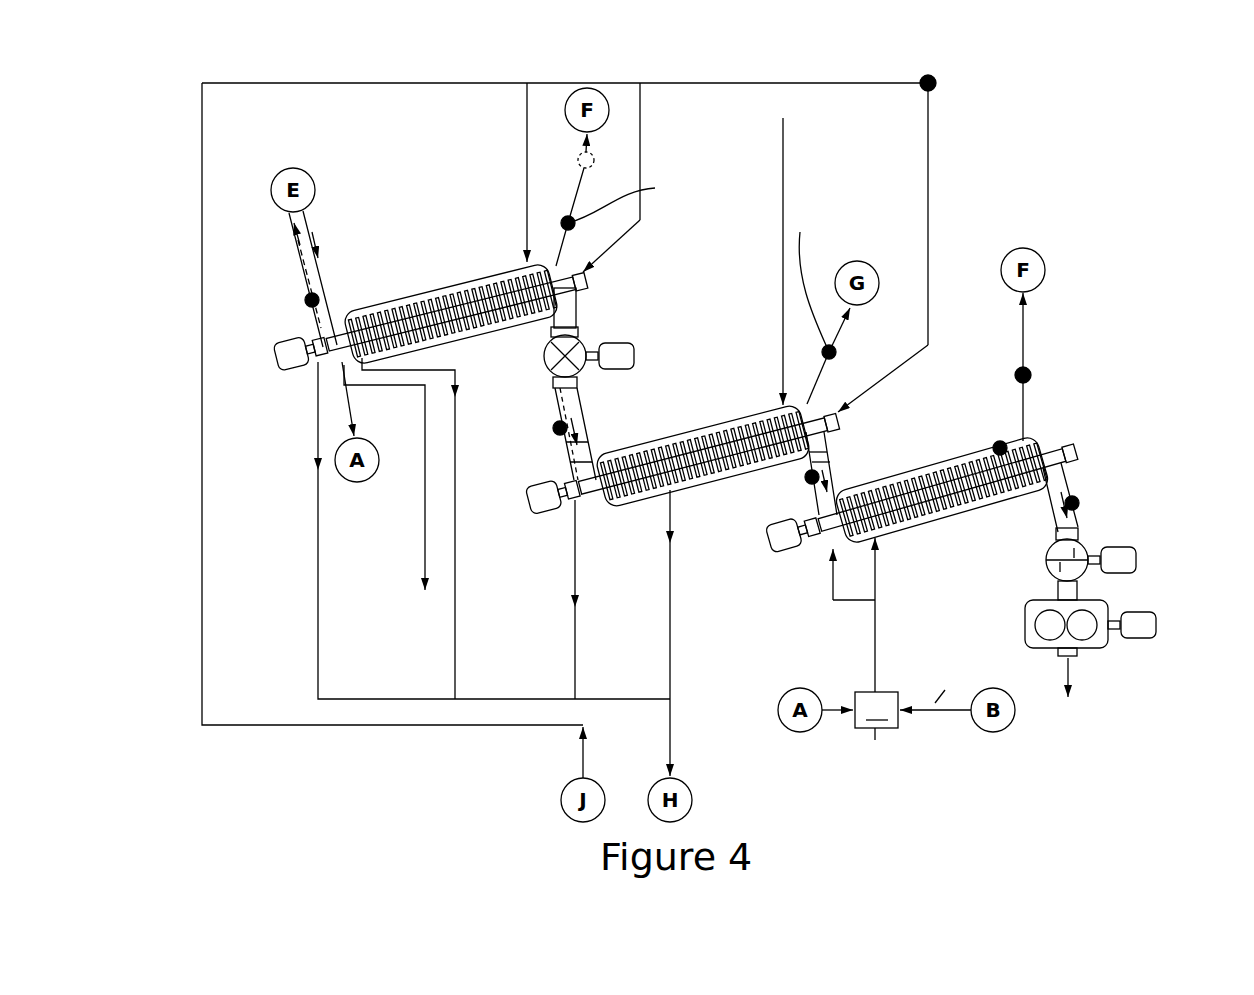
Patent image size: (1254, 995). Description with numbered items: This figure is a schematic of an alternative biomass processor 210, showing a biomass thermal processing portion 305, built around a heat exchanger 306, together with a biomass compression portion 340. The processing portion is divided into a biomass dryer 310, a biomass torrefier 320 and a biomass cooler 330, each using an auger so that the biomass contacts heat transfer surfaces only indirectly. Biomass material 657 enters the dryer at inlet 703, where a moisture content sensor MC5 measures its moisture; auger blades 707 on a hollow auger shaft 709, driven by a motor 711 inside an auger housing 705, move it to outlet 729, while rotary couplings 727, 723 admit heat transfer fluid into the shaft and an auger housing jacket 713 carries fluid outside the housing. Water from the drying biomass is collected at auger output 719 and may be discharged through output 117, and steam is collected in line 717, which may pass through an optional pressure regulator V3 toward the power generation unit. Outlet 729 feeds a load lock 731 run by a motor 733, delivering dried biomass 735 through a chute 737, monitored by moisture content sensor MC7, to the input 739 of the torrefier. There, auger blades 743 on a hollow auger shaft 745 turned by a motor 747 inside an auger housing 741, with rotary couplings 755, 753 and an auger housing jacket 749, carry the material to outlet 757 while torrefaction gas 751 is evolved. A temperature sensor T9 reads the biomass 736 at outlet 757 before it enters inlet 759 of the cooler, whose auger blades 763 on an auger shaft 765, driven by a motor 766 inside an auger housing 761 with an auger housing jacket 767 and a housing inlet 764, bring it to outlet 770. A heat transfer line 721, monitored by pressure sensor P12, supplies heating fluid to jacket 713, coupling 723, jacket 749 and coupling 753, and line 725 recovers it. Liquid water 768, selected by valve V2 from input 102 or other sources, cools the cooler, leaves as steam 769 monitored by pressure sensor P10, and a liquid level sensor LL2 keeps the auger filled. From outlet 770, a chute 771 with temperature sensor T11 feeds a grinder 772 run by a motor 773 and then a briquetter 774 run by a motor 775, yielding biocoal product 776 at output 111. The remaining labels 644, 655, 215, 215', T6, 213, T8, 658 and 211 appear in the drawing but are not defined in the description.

The biomass processor 210 is at (170, 134).
The biomass thermal processing portion 305 is at (185, 245).
The heat exchanger 306 is at (300, 622).
The biomass dryer 310 is at (410, 205).
The biomass torrefier 320 is at (740, 308).
The biomass cooler 330 is at (1013, 235).
The biomass compression portion 340 is at (1175, 515).
The vapor return flow 644 is at (290, 226).
The material 657 is at (320, 238).
The feed line divider 655 is at (300, 273).
The moisture content sensor MC5 is at (305, 301).
The inlet 703 is at (333, 305).
The rotary coupling 727 is at (308, 346).
The motor 711 is at (278, 372).
The auger blades 707 is at (405, 298).
The auger housing jacket 713 is at (497, 273).
The heat transfer line 721 is at (729, 419).
The pressure regulator V3 is at (578, 160).
The line 717 is at (562, 217).
The control signal line 215 is at (769, 438).
The auger housing 705 is at (580, 268).
The temperature, VOC and mass flow sensors T6 is at (717, 204).
The rotary coupling 723 is at (590, 283).
The hollow auger shaft 709 is at (577, 311).
The outlet 729 is at (579, 333).
The load lock 731 is at (543, 362).
The motor 733 is at (638, 358).
The dried biomass 735 is at (588, 408).
The chute 737 is at (557, 402).
The moisture content sensor MC7 is at (553, 430).
The input 739 is at (572, 452).
The rotary coupling 755 is at (566, 492).
The motor 747 is at (545, 520).
The auger output 719 is at (368, 399).
The line 725 is at (511, 534).
The output 117 is at (395, 495).
The auger blades 743 is at (680, 433).
The auger housing jacket 749 is at (760, 414).
The auger housing 741 is at (880, 378).
The torrefaction gas 751 is at (846, 369).
The vapor line to G 213 is at (863, 330).
The temperature, moisture and mass flow sensors T8 is at (845, 278).
The pressure sensor P12 is at (936, 86).
The rotary coupling 753 is at (843, 425).
The hollow auger shaft 745 is at (830, 450).
The biomass 736 is at (830, 468).
The outlet 757 is at (802, 470).
The inlet 759 is at (808, 481).
The temperature sensor T9 is at (800, 500).
The auger blades 763 is at (915, 469).
The auger housing 761 is at (1045, 440).
The auger housing jacket 767 is at (963, 455).
The liquid level sensor LL2 is at (998, 442).
The auger shaft 765 is at (1070, 458).
The housing inlet 764 is at (808, 535).
The motor 766 is at (775, 560).
The liquid water 768 is at (877, 569).
The steam 769 is at (1006, 367).
The pressure sensor P10 is at (1031, 373).
The vapor line to F 215' is at (1068, 320).
The outlet 770 is at (1068, 478).
The temperature sensor T11 is at (1080, 500).
The discharge pipe wall 658 is at (1052, 505).
The chute 771 is at (1080, 530).
The grinder 772 is at (1045, 570).
The motor 773 is at (1140, 560).
The briquetter 774 is at (1025, 635).
The motor 775 is at (1160, 625).
The biocoal product 776 is at (1089, 677).
The output 111 is at (1077, 717).
The valve V2 is at (896, 670).
The input 102 is at (884, 762).
The heating fluid lines to J and H 211 is at (653, 660).